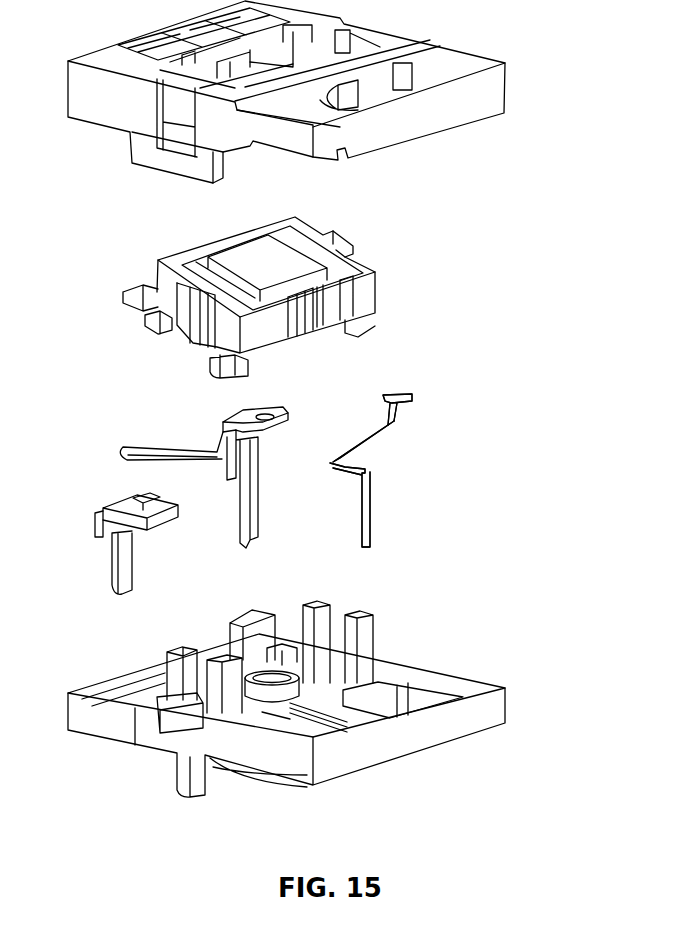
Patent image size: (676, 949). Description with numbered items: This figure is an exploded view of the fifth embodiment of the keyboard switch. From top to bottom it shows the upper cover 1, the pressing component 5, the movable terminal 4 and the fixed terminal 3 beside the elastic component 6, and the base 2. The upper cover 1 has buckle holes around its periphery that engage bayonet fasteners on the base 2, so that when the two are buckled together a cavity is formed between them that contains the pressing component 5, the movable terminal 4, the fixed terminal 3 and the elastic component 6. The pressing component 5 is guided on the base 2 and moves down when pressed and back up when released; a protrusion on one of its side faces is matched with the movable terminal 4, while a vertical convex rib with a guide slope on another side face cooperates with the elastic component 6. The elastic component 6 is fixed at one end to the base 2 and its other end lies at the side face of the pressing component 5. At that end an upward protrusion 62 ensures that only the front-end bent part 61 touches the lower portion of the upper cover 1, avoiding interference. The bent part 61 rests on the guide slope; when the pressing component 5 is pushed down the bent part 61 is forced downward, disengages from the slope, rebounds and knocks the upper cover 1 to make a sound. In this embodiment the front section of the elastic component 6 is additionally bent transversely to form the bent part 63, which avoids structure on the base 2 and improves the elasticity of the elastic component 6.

The upper cover 1 is at (400, 135).
The base 2 is at (375, 748).
The fixed terminal 3 is at (115, 545).
The movable terminal 4 is at (223, 423).
The pressing component 5 is at (357, 302).
The elastic component 6 is at (503, 465).
The bent part 61 is at (387, 395).
The protrusion 62 is at (390, 427).
The bent part 63 is at (367, 467).